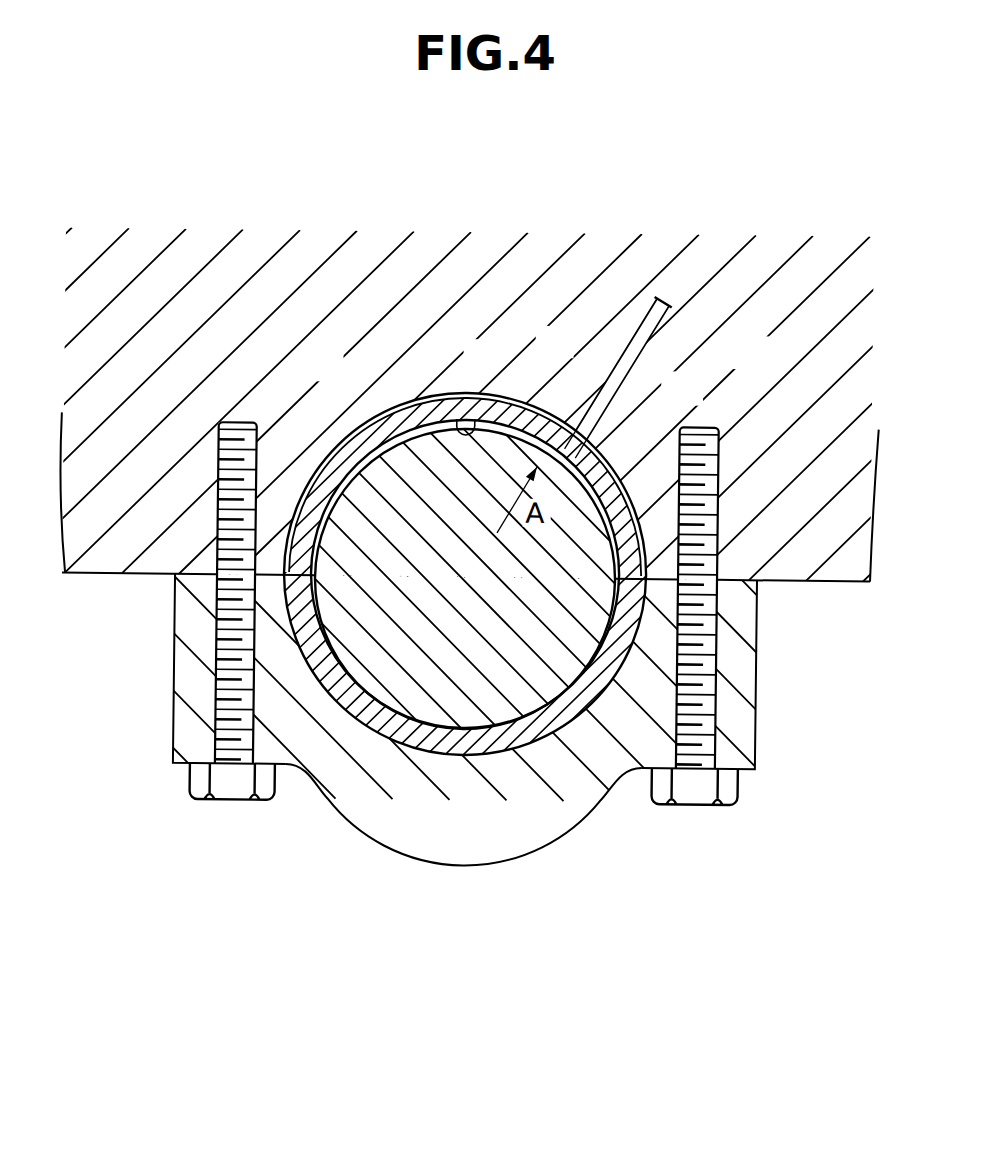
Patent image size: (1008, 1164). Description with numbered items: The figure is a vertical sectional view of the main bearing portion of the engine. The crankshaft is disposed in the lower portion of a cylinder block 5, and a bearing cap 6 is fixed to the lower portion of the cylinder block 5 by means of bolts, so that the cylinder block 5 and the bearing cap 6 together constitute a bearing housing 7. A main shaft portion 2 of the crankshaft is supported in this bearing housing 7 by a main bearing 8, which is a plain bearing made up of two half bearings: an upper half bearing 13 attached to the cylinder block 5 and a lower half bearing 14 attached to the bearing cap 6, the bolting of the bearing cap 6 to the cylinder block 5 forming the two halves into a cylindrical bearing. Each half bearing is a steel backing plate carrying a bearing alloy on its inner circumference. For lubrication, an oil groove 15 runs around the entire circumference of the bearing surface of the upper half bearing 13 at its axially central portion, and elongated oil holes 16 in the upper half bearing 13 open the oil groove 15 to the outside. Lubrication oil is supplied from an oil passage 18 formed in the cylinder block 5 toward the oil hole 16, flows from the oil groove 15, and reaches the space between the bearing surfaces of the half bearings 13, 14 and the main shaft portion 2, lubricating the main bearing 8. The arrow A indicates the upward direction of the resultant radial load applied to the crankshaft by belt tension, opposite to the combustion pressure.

The main shaft portion 2 is at (414, 701).
The cylinder block 5 is at (847, 496).
The bearing cap 6 is at (601, 810).
The bearing housing 7 is at (768, 596).
The main bearing 8 is at (350, 714).
The upper half bearing 13 is at (598, 446).
The lower half bearing 14 is at (505, 745).
The oil groove 15 is at (475, 417).
The oil hole 16 is at (355, 434).
The oil passage 18 is at (639, 336).